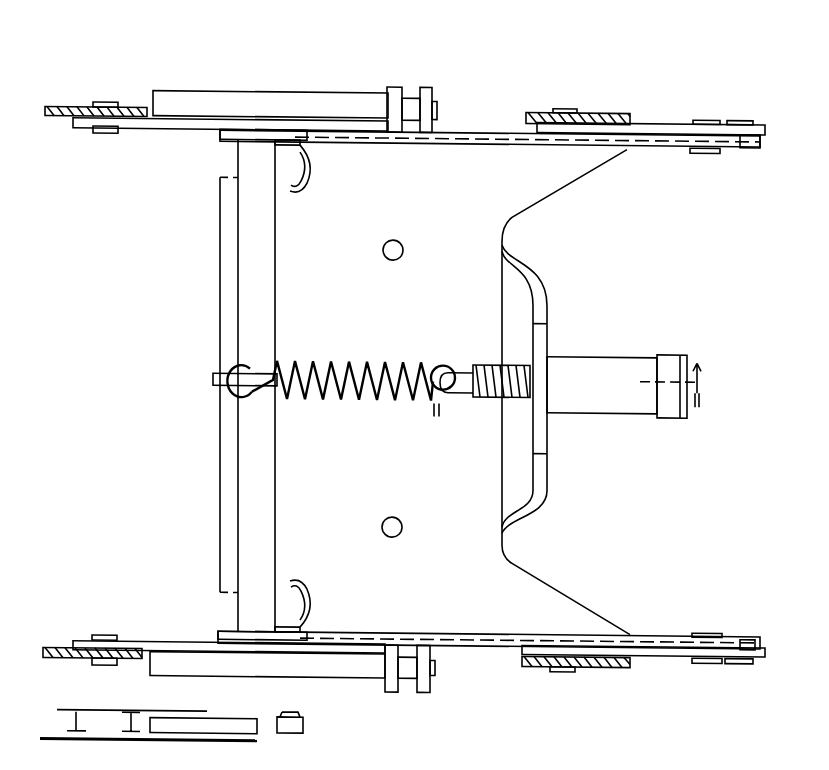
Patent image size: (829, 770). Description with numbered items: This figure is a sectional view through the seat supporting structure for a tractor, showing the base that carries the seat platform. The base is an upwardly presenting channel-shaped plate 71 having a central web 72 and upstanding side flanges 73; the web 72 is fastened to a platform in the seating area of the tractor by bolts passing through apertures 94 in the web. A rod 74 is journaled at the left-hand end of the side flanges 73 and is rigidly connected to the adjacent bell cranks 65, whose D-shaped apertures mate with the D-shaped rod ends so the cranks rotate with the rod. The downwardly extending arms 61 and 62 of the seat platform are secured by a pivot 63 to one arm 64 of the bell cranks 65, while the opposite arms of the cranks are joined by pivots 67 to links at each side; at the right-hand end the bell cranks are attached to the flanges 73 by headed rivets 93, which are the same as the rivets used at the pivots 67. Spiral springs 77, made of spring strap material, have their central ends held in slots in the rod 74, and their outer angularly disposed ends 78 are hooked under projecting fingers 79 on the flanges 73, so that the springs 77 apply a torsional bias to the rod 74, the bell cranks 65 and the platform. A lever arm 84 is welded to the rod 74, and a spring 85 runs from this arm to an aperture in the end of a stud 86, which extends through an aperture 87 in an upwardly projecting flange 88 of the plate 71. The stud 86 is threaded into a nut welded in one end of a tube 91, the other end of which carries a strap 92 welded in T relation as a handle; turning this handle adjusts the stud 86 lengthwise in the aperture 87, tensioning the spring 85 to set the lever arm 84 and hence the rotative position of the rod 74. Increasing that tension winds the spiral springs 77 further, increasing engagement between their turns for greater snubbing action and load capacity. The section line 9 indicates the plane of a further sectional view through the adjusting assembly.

The downwardly extending arm 61 is at (590, 117).
The downwardly extending arm 62 is at (55, 106).
The pivot 63 is at (100, 133).
The arm of bell crank 64 is at (168, 127).
The bell crank 65 is at (215, 139).
The pivot 67 is at (302, 190).
The channel-shaped plate 71 is at (503, 240).
The central web 72 is at (478, 536).
The side flange 73 is at (463, 143).
The rod 74 is at (238, 490).
The spiral spring 77 is at (308, 98).
The outer end of spiral spring 78 is at (413, 90).
The projecting finger 79 is at (395, 85).
The lever arm 84 is at (250, 375).
The spring 85 is at (362, 362).
The stud 86 is at (487, 366).
The aperture 87 is at (520, 393).
The upwardly projecting flange 88 is at (546, 473).
The tube 91 is at (590, 360).
The strap 92 is at (688, 355).
The headed rivet 93 is at (700, 150).
The aperture 94 is at (400, 243).
The section line 9- 9 is at (437, 366).